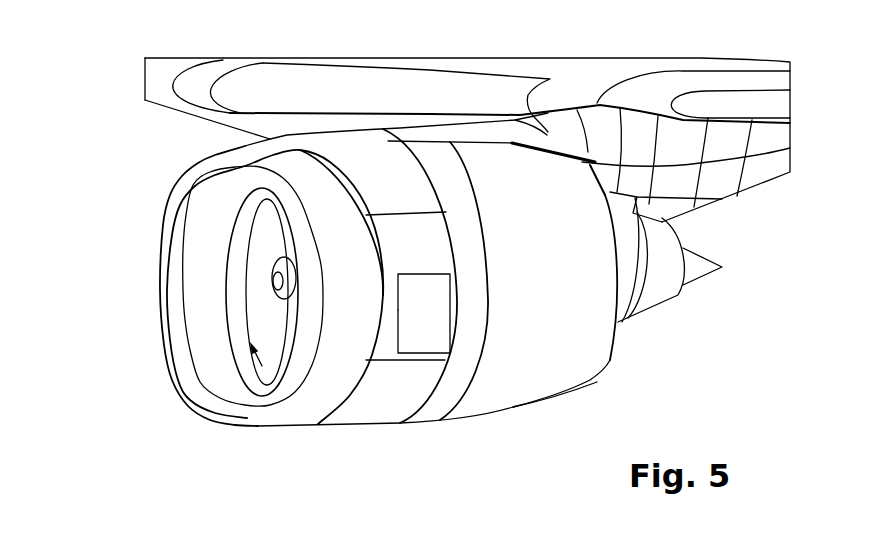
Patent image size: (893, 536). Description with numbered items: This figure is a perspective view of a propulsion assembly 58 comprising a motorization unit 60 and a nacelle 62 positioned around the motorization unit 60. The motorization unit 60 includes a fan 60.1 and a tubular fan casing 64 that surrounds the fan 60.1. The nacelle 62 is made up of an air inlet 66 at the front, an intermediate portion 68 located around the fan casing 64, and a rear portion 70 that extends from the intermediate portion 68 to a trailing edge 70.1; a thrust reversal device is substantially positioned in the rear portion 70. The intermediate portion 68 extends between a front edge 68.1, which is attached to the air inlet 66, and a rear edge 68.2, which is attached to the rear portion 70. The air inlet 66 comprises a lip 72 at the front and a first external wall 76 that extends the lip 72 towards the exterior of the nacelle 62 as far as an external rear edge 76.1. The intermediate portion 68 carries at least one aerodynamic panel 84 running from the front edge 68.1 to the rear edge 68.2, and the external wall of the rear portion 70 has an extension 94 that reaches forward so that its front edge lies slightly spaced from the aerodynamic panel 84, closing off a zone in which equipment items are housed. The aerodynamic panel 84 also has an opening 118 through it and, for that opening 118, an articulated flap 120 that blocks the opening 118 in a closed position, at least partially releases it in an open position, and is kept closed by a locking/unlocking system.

The propulsion assembly 58 is at (176, 398).
The motorization unit 60 is at (648, 285).
The fan 60.1 is at (255, 295).
The nacelle 62 is at (587, 436).
The fan casing 64 is at (217, 412).
The air inlet 66 is at (186, 159).
The intermediate portion 68 is at (390, 428).
The front edge 68.1 is at (352, 407).
The rear edge 68.2 is at (424, 400).
The rear portion 70 is at (580, 395).
The trailing edge 70.1 is at (611, 350).
The lip 72 is at (172, 197).
The first external wall 76 is at (258, 132).
The external rear edge 76.1 is at (333, 145).
The aerodynamic panel 84 is at (443, 238).
The extension 94 is at (482, 353).
The opening 118 is at (395, 310).
The flap 120 is at (395, 289).